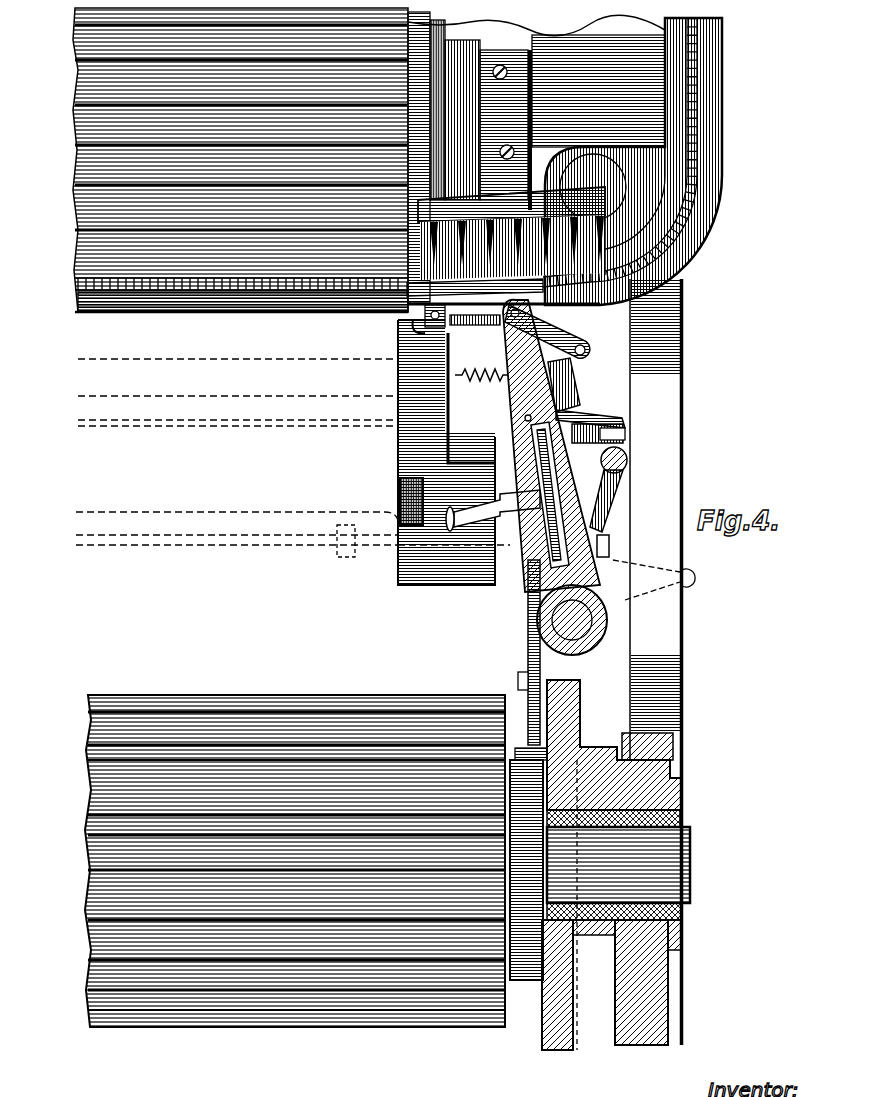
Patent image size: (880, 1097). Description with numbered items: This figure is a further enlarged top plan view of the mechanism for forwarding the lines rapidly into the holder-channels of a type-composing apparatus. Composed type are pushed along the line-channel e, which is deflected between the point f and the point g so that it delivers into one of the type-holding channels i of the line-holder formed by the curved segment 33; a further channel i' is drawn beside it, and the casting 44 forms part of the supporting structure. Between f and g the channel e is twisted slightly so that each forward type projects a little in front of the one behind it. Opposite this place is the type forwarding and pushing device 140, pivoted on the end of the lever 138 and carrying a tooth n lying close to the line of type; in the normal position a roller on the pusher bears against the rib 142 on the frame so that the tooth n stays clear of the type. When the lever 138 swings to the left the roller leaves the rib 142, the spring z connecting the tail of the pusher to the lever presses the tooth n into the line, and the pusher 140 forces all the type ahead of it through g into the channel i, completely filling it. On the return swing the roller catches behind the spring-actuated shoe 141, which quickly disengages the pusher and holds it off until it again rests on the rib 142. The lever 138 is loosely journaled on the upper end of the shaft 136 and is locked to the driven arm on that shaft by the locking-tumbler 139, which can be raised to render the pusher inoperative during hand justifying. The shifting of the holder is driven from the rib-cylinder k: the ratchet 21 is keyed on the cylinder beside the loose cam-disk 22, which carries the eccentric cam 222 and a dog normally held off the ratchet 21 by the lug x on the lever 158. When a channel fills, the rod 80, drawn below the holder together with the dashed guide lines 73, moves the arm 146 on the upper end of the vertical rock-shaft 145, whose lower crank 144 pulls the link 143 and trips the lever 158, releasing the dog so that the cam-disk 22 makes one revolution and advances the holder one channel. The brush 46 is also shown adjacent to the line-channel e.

The type-holding channel i is at (240, 160).
The upper roller section i' is at (250, 33).
The line-channel e is at (697, 117).
The brush 46 is at (605, 249).
The rib 142 is at (503, 291).
The point f is at (640, 297).
The casting 44 is at (397, 460).
The spring-actuated shoe 141 is at (452, 325).
The locking-tumbler 139 is at (515, 443).
The link 143 is at (528, 608).
The type forwarding and pushing device 140 is at (565, 342).
The spring z is at (578, 387).
The crank 144 is at (607, 413).
The rock-shaft 145 is at (622, 438).
The arm 146 is at (612, 500).
The lever 138 is at (607, 520).
The shaft 136 is at (607, 633).
The lever 158 is at (540, 645).
The lug x is at (528, 722).
The cam-disk 22 is at (578, 713).
The eccentric cam 222 is at (600, 747).
The ratchet 21 is at (515, 838).
The rib-cylinder k is at (300, 712).
The guide line 73 is at (238, 417).
The rod 80 is at (205, 540).
The curved segment 33 is at (200, 308).
The point g is at (330, 318).
The tooth n is at (378, 314).